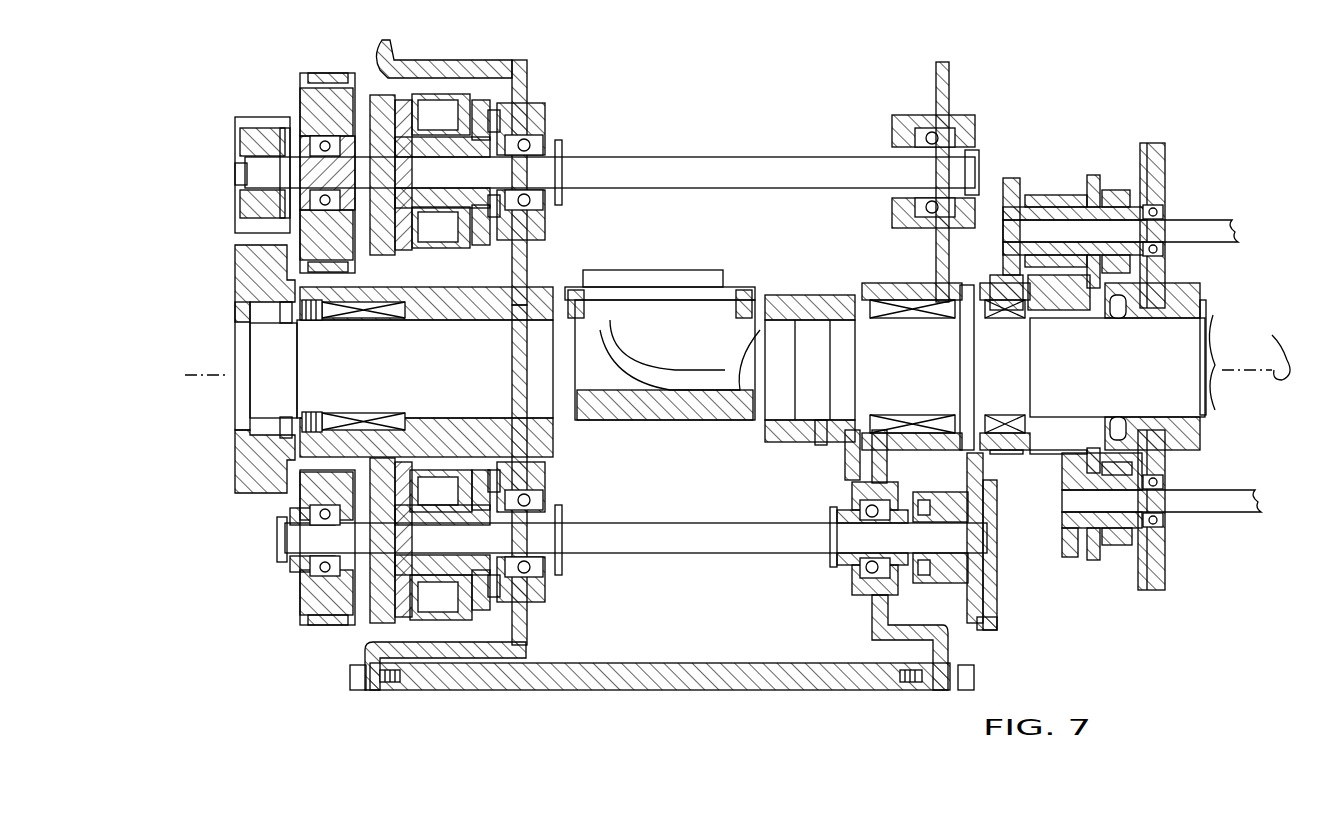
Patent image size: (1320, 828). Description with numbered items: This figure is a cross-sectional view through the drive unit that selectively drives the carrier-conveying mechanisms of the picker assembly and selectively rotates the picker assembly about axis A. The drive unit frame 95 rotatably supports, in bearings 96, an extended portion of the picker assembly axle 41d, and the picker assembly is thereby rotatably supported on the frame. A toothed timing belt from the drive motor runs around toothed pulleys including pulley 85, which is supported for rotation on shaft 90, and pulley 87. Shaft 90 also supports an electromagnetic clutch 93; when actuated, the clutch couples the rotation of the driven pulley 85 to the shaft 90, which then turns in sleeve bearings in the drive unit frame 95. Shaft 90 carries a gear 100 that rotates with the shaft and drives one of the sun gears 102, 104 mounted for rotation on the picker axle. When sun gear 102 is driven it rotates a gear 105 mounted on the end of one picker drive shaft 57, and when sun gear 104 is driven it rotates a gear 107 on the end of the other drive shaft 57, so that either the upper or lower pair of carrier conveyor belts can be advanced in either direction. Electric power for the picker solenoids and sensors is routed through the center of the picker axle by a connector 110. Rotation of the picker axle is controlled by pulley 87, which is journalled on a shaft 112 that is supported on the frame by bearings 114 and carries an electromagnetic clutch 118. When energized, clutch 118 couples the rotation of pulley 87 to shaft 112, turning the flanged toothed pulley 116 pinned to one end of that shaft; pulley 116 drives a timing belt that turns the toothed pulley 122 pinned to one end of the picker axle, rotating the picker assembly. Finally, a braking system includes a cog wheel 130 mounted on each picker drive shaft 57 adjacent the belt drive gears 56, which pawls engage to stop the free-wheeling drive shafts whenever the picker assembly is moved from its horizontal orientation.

The picker assembly axle 41d is at (784, 370).
The belt drive gear 56 is at (1124, 192).
The picker assembly drive shaft 57 is at (1203, 210).
The toothed pulley 85 is at (295, 621).
The toothed pulley 87 is at (297, 91).
The shaft 90 is at (285, 553).
The electromagnetic clutch 93 is at (488, 603).
The drive unit frame 95 is at (548, 582).
The bearing 96 is at (370, 318).
The gear 100 is at (993, 617).
The sun gear 102 is at (1025, 453).
The sun gear 104 is at (1053, 450).
The gear 105 is at (1017, 177).
The gear 107 is at (1070, 552).
The connector 110 is at (650, 278).
The shaft 112 is at (660, 163).
The bearing 114 is at (530, 138).
The flanged toothed pulley 116 is at (235, 140).
The electromagnetic clutch 118 is at (489, 105).
The toothed pulley 122 is at (228, 465).
The cog wheel 130 is at (1090, 175).
The axis A is at (1276, 345).